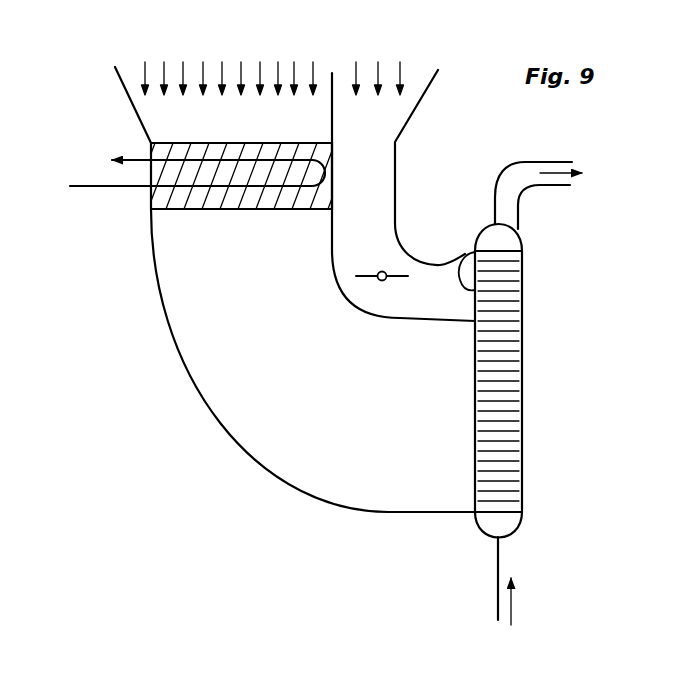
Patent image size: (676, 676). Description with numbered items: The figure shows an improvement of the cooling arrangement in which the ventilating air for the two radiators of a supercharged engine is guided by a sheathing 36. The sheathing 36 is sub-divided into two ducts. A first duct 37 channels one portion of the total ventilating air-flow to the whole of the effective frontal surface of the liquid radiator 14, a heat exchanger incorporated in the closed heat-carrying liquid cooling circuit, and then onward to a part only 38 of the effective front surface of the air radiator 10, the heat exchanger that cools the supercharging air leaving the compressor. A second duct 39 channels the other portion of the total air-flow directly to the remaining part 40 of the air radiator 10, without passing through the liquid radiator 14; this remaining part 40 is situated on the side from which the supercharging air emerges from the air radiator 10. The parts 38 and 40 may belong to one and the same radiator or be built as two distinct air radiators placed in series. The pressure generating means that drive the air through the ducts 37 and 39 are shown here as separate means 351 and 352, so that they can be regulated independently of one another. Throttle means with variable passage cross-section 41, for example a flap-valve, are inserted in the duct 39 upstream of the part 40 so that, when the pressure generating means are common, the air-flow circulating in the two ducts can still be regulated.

The heat exchanger 10 is at (530, 402).
The heat exchanger 14 is at (143, 205).
The pressure generating means 351 is at (226, 53).
The pressure generating means 352 is at (380, 48).
The sheathing 36 is at (233, 447).
The first duct 37 is at (235, 348).
The part of the effective front surface of the air radiator 38 is at (475, 428).
The second duct 39 is at (366, 216).
The remaining part of the air radiator 40 is at (469, 256).
The throttle means with variable passage cross-section 41 is at (397, 272).